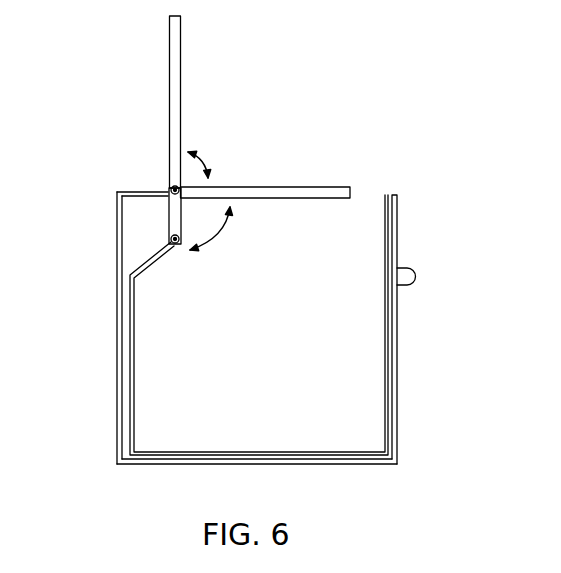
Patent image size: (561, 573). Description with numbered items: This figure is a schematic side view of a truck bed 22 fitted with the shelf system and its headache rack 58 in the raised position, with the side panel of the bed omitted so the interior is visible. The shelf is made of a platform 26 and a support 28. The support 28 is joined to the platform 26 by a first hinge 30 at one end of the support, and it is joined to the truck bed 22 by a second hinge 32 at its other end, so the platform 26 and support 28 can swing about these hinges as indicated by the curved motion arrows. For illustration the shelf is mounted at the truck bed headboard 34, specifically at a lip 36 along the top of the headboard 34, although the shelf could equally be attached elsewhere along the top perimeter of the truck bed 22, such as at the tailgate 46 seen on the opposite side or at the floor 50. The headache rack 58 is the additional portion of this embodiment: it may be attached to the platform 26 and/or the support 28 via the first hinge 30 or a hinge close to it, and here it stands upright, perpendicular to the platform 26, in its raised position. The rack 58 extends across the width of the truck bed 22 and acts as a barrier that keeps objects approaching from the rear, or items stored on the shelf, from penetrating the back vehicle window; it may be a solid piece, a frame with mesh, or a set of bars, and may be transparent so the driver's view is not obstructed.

The truck bed 22 is at (215, 466).
The platform 26 is at (298, 186).
The support 28 is at (168, 213).
The first hinge 30 is at (172, 187).
The second hinge 32 is at (176, 246).
The truck bed headboard 34 is at (122, 353).
The lip 36 is at (142, 208).
The tailgate 46 is at (398, 228).
The floor 50 is at (321, 457).
The headache rack 58 is at (169, 81).